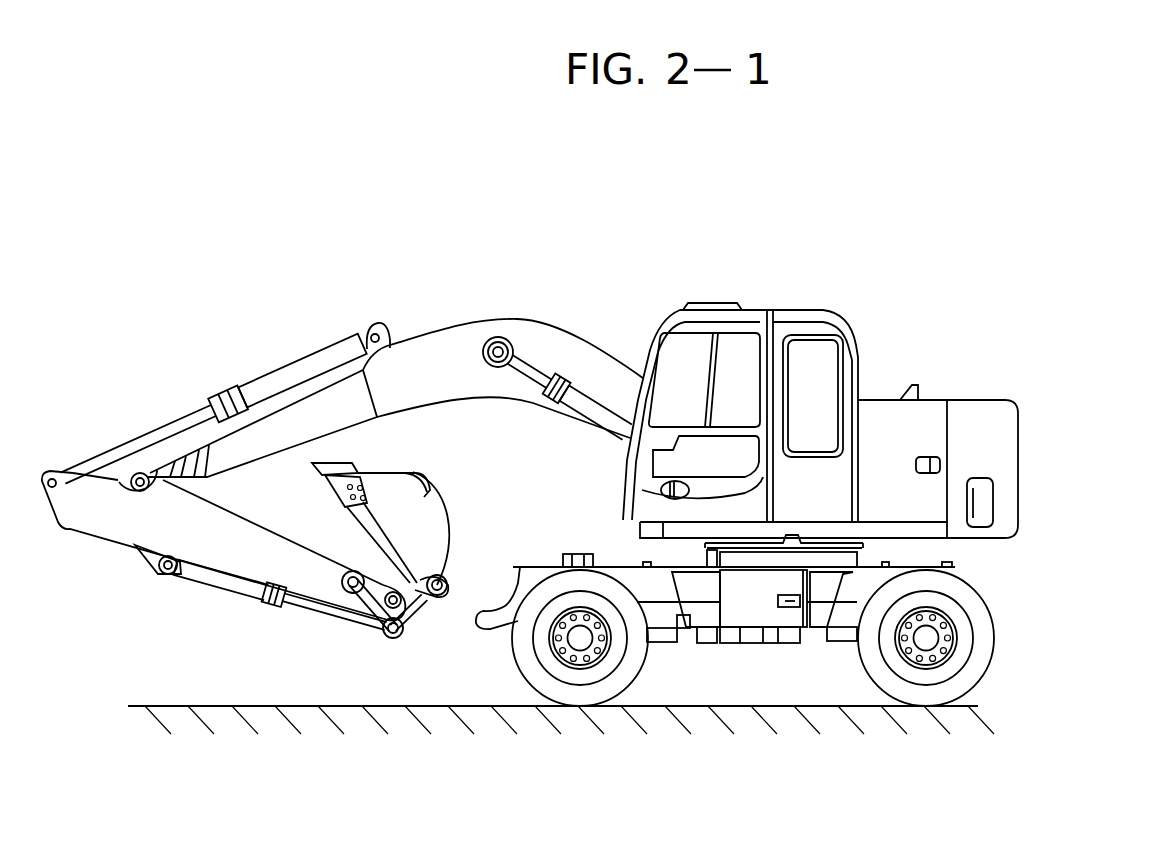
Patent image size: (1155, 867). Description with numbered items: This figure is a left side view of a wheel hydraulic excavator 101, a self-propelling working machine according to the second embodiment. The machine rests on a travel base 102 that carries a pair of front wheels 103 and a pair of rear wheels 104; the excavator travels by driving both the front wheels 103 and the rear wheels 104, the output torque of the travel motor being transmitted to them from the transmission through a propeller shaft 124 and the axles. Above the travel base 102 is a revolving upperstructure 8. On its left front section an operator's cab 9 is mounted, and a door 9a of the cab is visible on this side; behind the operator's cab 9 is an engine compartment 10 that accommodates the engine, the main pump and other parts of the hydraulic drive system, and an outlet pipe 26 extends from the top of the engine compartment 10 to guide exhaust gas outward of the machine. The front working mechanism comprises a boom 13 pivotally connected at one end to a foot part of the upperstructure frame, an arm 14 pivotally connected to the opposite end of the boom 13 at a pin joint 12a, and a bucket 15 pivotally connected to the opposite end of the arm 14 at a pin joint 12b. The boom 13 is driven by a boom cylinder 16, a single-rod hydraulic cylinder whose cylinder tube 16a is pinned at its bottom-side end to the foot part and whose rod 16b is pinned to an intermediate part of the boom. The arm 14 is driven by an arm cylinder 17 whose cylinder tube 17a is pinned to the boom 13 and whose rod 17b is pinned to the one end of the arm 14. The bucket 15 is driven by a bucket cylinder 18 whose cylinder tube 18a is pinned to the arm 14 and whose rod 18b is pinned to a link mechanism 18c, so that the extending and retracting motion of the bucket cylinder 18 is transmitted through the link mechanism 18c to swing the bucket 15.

The wheel hydraulic excavator 101 is at (251, 205).
The travel base 102 is at (999, 599).
The front wheels 103 is at (587, 693).
The rear wheels 104 is at (925, 693).
The propeller shaft 124 is at (667, 640).
The revolving upperstructure 8 is at (838, 303).
The operator's cab 9 is at (697, 305).
The door 9a is at (681, 348).
The engine compartment 10 is at (940, 399).
The outlet pipe 26 is at (920, 397).
The boom 13 is at (556, 343).
The arm 14 is at (102, 527).
The bucket 15 is at (443, 518).
The boom cylinder 16 is at (550, 413).
The cylinder tube 16a is at (593, 433).
The rod 16b is at (518, 377).
The arm cylinder 17 is at (236, 392).
The cylinder tube 17a is at (293, 372).
The rod 17b is at (145, 440).
The bucket cylinder 18 is at (277, 605).
The cylinder tube 18a is at (230, 587).
The rod 18b is at (342, 617).
The link mechanism 18c is at (417, 612).
The pin joint 12a is at (132, 478).
The pin joint 12b is at (394, 638).